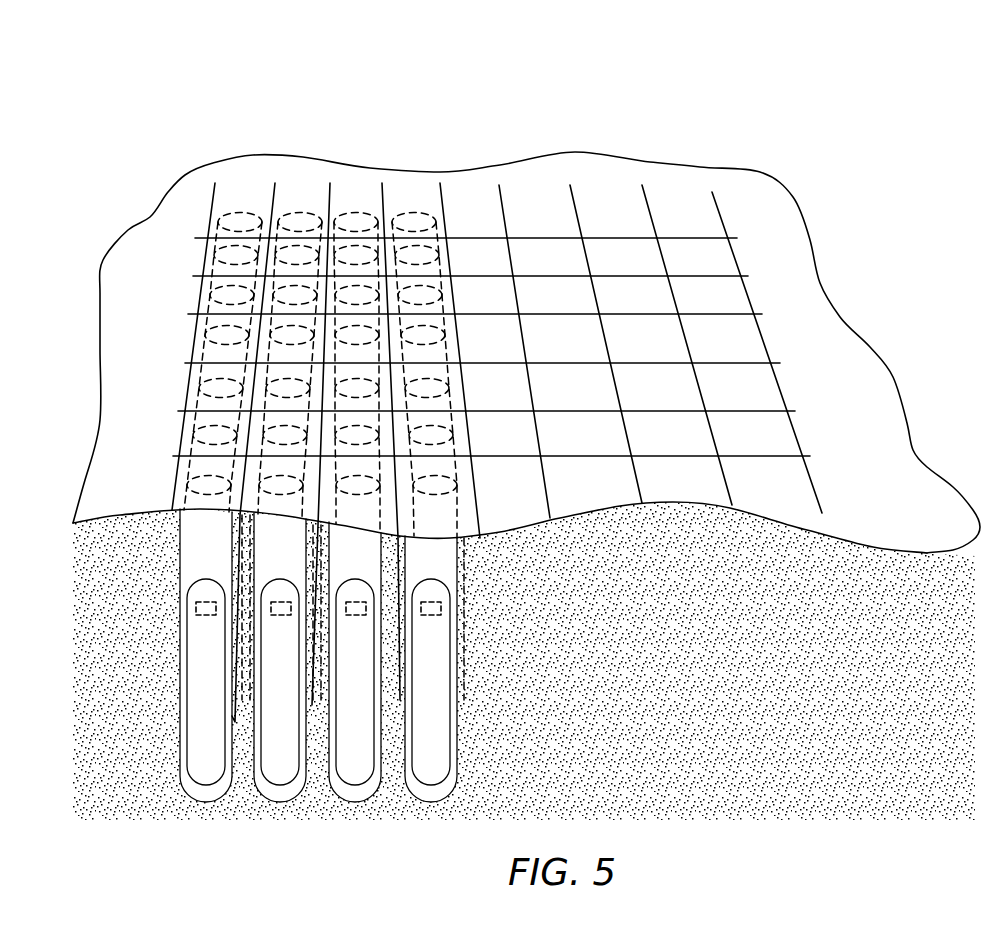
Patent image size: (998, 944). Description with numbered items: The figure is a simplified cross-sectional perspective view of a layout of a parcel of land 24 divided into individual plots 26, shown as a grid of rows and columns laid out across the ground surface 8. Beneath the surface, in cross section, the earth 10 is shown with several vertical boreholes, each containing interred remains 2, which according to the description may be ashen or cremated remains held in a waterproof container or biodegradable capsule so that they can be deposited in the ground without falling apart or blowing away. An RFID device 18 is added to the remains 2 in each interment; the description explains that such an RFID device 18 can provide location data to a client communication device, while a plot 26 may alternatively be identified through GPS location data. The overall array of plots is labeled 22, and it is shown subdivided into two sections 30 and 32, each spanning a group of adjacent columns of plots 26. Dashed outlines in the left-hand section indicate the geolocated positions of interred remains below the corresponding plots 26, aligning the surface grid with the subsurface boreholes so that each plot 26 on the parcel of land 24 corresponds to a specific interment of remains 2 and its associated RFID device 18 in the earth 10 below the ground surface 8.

The remains 2 is at (432, 758).
The ground surface 8 is at (460, 560).
The subsurface formation 10 is at (580, 647).
The RFID device 18 is at (428, 617).
The surface array 22 is at (212, 197).
The survey area 24 is at (888, 442).
The plot 26 is at (197, 379).
The first array section 30 is at (440, 195).
The second array section 32 is at (445, 195).